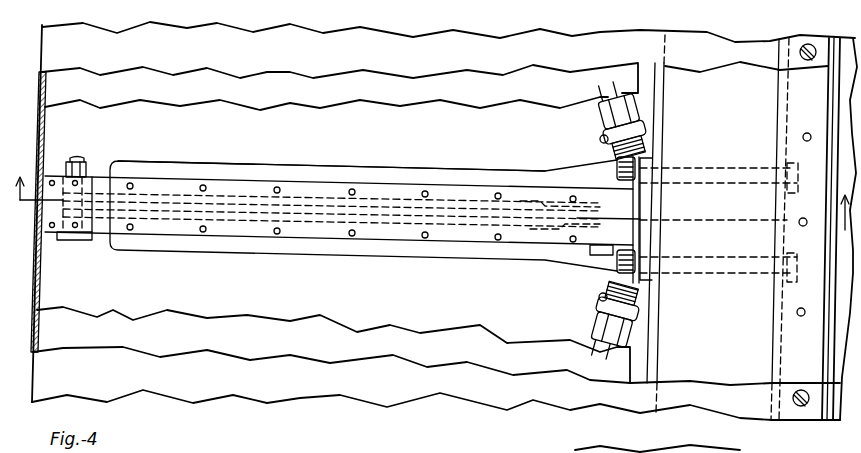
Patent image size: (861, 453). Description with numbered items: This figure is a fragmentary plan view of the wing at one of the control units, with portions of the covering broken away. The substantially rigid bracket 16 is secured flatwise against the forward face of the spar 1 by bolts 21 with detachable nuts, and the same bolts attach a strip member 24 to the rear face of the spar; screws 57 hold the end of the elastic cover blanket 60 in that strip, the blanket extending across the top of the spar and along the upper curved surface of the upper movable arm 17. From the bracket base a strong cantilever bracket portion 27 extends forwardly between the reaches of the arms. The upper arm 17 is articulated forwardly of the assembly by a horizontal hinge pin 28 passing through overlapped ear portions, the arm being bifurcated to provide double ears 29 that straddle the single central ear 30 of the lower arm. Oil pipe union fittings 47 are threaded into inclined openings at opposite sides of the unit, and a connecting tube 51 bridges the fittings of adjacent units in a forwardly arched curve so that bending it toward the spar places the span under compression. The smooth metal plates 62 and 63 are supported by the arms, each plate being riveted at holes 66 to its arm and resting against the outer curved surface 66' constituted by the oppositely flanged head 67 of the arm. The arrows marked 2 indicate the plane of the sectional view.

The spar 1 is at (735, 366).
The section line 2 is at (430, 214).
The bracket member 16 is at (656, 205).
The upper movable arm member 17 is at (377, 190).
The upper bolt 21 is at (615, 172).
The strip member 24 is at (836, 344).
The cantilever member 27 is at (444, 165).
The hinge pin 28 is at (82, 241).
The double ears 29 is at (53, 174).
The single ear 30 is at (33, 237).
The oil pipe union fitting 47 is at (601, 139).
The connecting tube 51 is at (632, 90).
The screws 57 is at (802, 407).
The cover blanket 60 is at (128, 60).
The upper plate 62 is at (256, 100).
The lower plate 63 is at (172, 140).
The holes 66 is at (338, 199).
The outer curved surfaces 66' is at (331, 170).
The flanged heads 67 is at (247, 187).